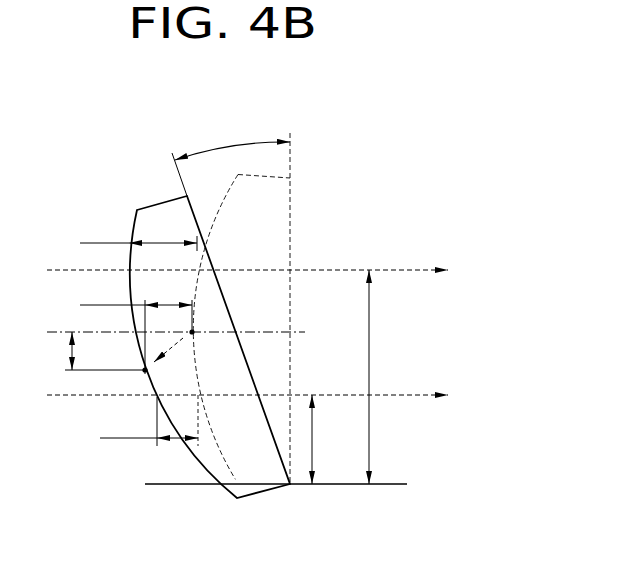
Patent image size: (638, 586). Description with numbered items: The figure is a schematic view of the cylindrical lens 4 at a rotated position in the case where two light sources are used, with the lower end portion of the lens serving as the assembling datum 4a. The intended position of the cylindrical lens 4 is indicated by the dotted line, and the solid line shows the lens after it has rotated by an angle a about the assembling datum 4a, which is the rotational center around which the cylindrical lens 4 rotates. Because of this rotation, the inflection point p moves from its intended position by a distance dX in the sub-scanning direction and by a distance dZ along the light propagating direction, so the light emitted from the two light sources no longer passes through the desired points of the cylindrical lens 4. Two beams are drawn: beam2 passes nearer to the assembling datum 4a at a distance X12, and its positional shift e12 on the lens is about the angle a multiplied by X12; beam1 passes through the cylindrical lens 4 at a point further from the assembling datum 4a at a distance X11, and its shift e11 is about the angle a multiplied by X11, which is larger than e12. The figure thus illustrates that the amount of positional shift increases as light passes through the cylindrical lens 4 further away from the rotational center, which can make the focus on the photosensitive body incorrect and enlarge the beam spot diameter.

The cylindrical lens 4 is at (148, 202).
The assembling datum 4a is at (390, 483).
The rotation angle a is at (232, 139).
The inflection point p is at (170, 360).
The shift in position of beam 1 e11 is at (138, 236).
The shift in position of beam 2 e12 is at (149, 420).
The distance of beam 1 from assembling datum X11 is at (390, 377).
The distance of beam 2 from assembling datum X12 is at (335, 439).
The shift distance along light propagating direction dZ is at (136, 327).
The shift distance in sub-scanning direction dX is at (89, 351).
The beam 1 beam1 is at (418, 270).
The beam 2 beam2 is at (418, 395).